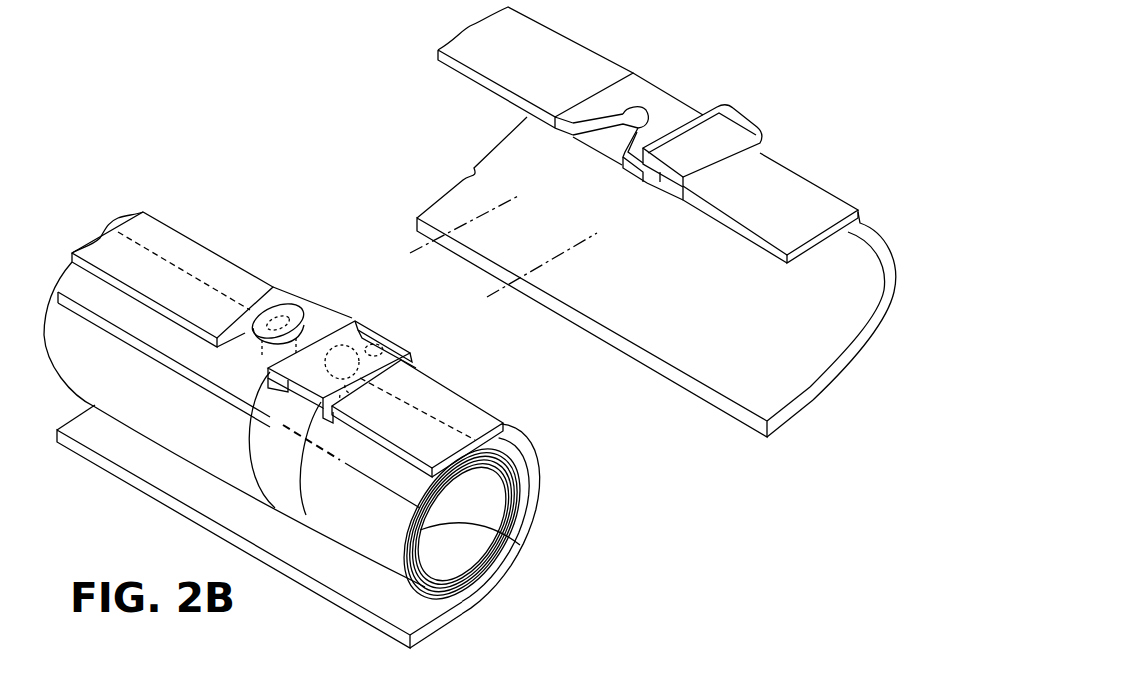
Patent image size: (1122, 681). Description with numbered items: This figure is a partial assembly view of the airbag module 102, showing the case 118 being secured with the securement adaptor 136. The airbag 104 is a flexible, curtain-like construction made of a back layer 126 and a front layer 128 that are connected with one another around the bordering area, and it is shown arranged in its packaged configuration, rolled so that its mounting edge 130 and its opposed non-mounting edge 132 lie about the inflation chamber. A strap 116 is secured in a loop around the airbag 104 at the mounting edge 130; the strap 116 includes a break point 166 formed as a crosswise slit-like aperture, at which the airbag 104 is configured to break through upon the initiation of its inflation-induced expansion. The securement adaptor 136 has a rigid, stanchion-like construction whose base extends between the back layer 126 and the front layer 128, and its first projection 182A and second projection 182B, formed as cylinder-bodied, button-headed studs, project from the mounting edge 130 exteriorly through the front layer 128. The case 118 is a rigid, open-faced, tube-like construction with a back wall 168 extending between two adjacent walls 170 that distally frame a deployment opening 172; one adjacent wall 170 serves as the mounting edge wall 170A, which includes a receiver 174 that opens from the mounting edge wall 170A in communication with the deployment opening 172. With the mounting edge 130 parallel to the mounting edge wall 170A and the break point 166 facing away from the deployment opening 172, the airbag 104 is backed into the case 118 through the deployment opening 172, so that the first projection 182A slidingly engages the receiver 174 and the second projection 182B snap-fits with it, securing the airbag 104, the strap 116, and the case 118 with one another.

The airbag module 102 is at (178, 216).
The airbag 104 is at (192, 266).
The strap 116 is at (258, 438).
The case 118 is at (453, 407).
The back layer 126 is at (531, 494).
The front layer 128 is at (528, 483).
The mounting edge 130 is at (203, 300).
The non-mounting edge 132 is at (520, 545).
The securement adaptor 136 is at (347, 330).
The break point 166 is at (262, 470).
The back wall 168 is at (543, 480).
The adjacent wall 170 is at (478, 600).
The mounting edge wall 170A is at (470, 417).
The deployment opening 172 is at (348, 588).
The receiver 174 is at (298, 398).
The first projection 182A is at (363, 347).
The second projection 182B is at (292, 320).